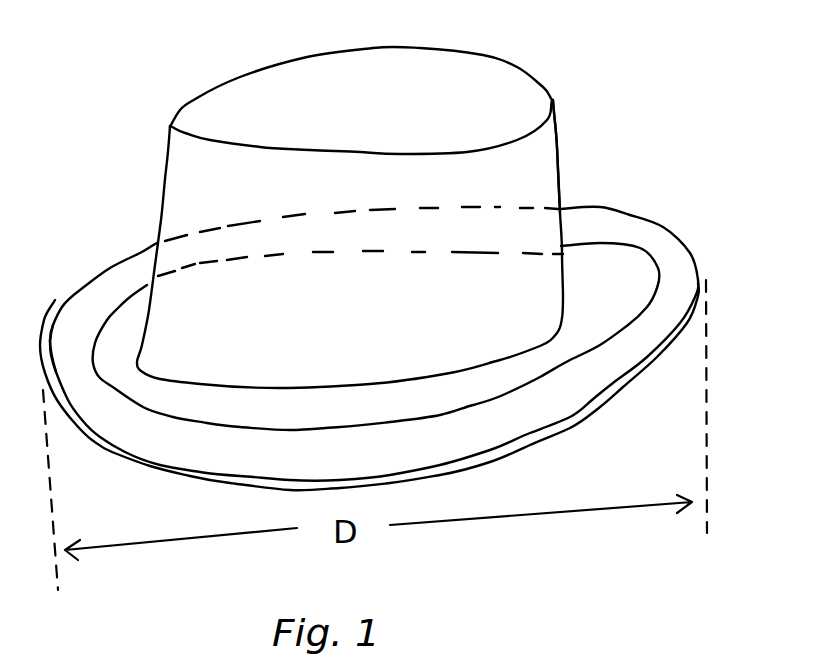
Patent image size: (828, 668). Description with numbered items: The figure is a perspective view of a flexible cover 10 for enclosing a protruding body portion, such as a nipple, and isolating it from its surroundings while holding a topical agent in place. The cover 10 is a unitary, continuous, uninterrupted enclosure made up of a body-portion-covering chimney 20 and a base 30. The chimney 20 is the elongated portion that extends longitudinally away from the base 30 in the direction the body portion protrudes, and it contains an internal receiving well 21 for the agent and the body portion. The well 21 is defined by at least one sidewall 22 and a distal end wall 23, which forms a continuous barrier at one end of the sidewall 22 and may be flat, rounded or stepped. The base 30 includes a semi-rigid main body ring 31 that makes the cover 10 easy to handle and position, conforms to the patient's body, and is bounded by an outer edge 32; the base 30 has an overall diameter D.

The cover 10 is at (659, 102).
The chimney 20 is at (208, 190).
The well 21 is at (551, 173).
The sidewall 22 is at (547, 287).
The distal end wall 23 is at (433, 88).
The base 30 is at (663, 333).
The main body ring 31 is at (97, 397).
The outer edge 32 is at (515, 434).